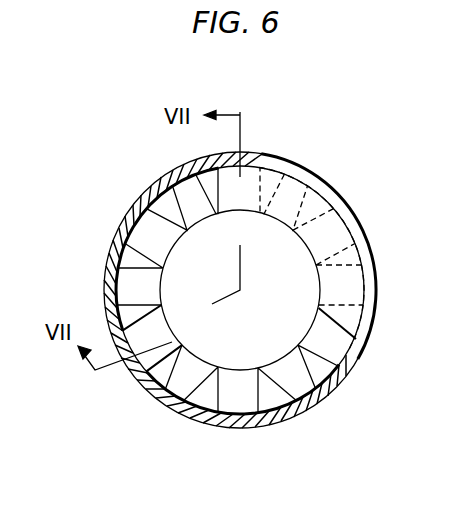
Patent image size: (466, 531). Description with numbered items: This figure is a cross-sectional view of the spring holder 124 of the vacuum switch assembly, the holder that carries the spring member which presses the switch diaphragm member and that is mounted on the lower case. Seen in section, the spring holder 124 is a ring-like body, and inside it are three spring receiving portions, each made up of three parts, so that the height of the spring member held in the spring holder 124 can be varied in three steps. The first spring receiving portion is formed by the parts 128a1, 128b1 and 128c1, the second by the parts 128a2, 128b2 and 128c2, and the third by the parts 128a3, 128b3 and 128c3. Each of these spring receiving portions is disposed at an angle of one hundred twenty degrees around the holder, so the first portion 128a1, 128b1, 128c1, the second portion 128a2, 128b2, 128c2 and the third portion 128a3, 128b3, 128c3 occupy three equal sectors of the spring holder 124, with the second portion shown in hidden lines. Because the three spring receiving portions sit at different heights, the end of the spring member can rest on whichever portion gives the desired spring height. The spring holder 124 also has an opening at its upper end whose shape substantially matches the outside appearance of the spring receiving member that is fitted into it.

The spring holder 124 is at (375, 286).
The spring receiving portion 128a1 is at (123, 288).
The spring receiving portion 128b1 is at (138, 227).
The spring receiving portion 128c1 is at (178, 186).
The spring receiving portion 128a2 is at (318, 176).
The spring receiving portion 128b2 is at (358, 222).
The spring receiving portion 128c2 is at (372, 266).
The spring receiving portion 128a3 is at (332, 393).
The spring receiving portion 128b3 is at (240, 406).
The spring receiving portion 128c3 is at (160, 380).